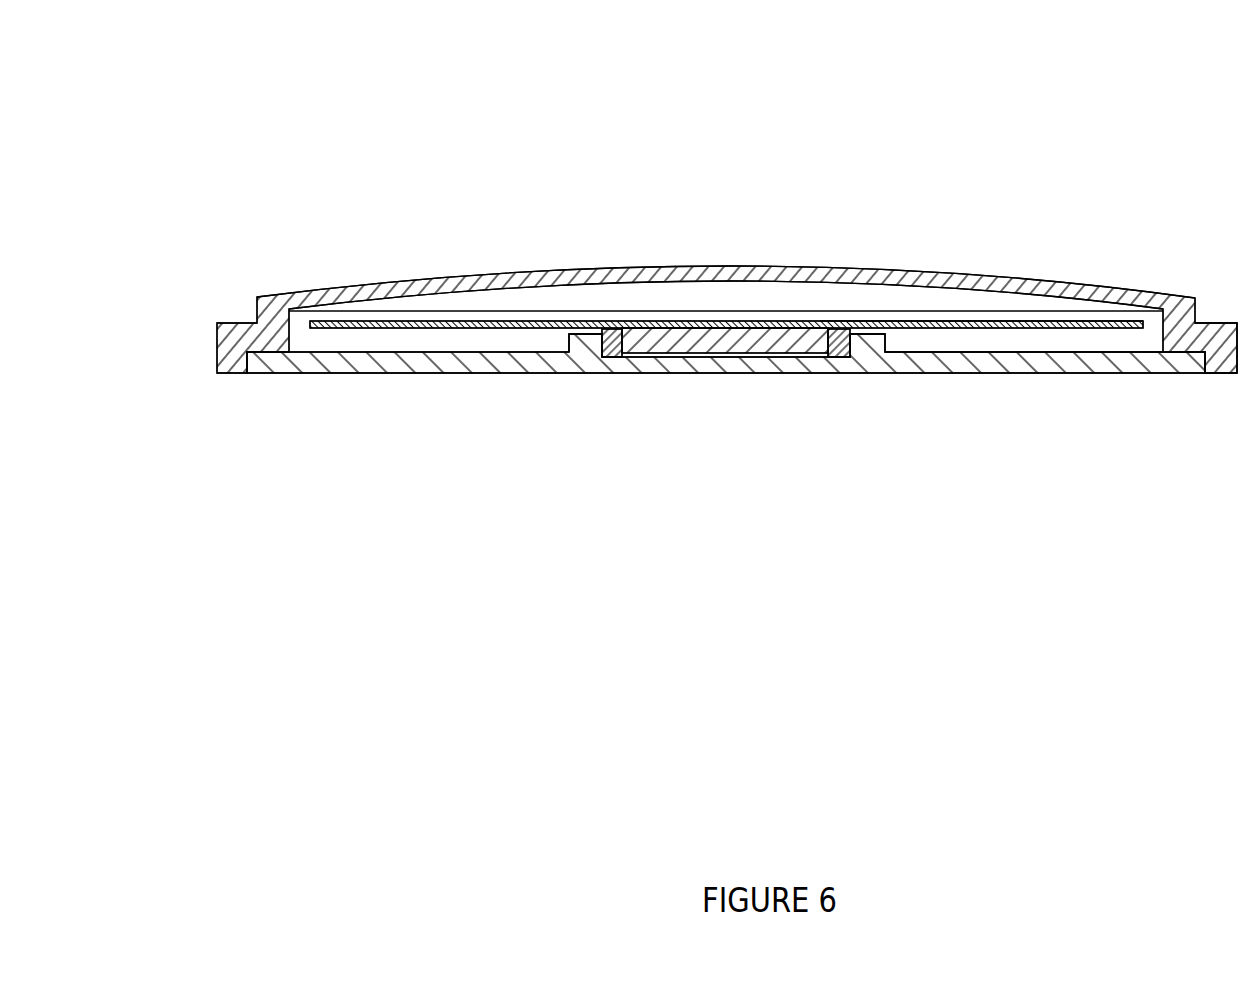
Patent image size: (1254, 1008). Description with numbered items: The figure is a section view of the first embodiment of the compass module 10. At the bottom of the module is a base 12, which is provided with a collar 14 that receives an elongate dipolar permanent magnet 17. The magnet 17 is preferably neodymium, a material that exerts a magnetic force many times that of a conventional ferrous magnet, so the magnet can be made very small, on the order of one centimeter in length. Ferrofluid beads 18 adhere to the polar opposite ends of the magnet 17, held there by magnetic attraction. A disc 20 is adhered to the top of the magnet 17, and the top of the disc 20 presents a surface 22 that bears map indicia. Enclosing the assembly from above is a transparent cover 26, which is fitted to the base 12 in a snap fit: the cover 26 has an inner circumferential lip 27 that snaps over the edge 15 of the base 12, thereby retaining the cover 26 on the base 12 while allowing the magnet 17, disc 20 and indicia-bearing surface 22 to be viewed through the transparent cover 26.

The compass module 10 is at (714, 323).
The base 12 is at (706, 428).
The collar 14 is at (404, 480).
The edge 15 is at (1027, 428).
The elongate dipolar permanent magnet 17 is at (695, 425).
The ferrofluid beads 18 is at (706, 474).
The disc 20 is at (726, 211).
The surface 22 is at (981, 208).
The transparent cover 26 is at (727, 233).
The inner circumferential lip 27 is at (1099, 475).